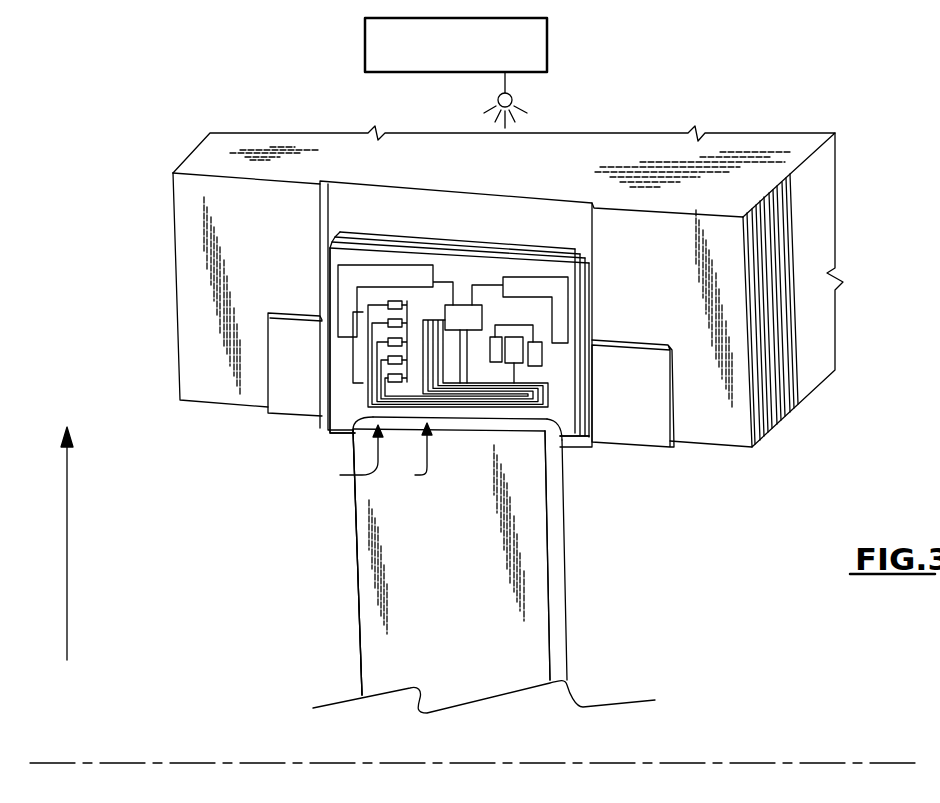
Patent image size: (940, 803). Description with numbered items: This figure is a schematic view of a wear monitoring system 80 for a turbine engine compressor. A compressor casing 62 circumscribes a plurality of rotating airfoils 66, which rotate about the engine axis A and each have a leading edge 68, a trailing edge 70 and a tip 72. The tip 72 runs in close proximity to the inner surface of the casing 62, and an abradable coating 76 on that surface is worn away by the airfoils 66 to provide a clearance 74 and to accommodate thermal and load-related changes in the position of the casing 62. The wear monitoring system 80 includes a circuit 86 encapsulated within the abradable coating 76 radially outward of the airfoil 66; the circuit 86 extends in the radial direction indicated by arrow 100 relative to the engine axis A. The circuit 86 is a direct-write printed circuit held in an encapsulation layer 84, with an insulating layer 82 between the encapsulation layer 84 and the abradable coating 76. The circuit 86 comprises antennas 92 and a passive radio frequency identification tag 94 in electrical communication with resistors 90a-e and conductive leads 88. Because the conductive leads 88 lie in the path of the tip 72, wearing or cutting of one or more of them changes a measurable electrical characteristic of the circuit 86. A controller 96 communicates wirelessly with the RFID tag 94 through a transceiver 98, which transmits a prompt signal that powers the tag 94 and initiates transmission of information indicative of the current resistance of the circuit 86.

The compressor casing 62 is at (802, 253).
The airfoil 66 is at (493, 608).
The leading edge 68 is at (561, 535).
The trailing edge 70 is at (356, 574).
The tip 72 is at (347, 456).
The clearance 74 is at (408, 459).
The abradable coating 76 is at (645, 405).
The wear monitoring system 80 is at (538, 236).
The insulating layer 82 is at (588, 445).
The encapsulation layer 84 is at (483, 360).
The circuit 86 is at (354, 387).
The conductive leads 88 is at (470, 418).
The resistors 90a-e is at (353, 362).
The antennas 92 is at (380, 278).
The radio frequency identification (RFID) tag 94 is at (468, 318).
The controller 96 is at (548, 35).
The transceiver 98 is at (517, 97).
The arrow 100 is at (67, 557).
The engine axis A is at (885, 763).